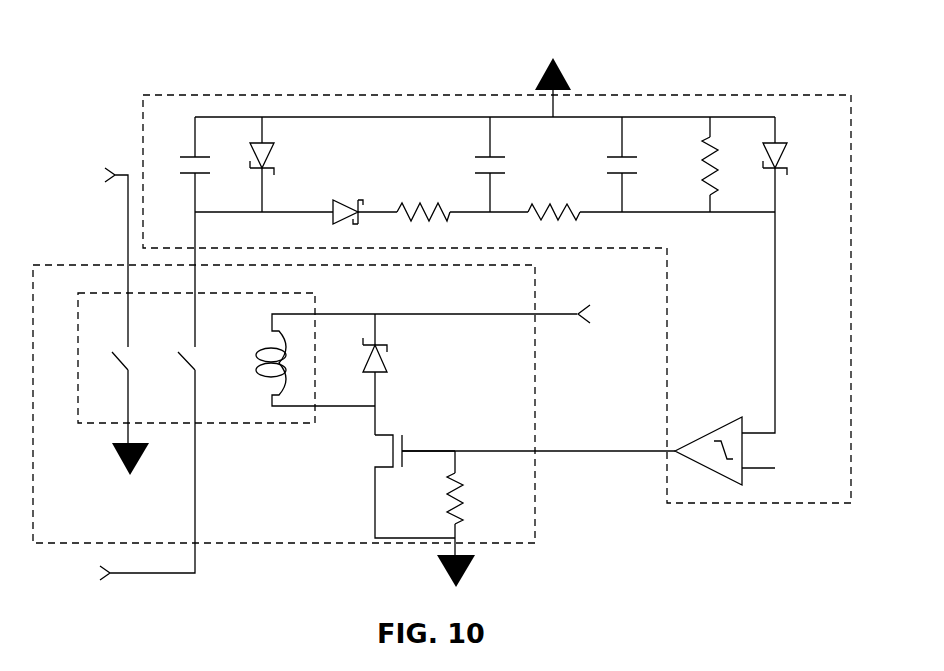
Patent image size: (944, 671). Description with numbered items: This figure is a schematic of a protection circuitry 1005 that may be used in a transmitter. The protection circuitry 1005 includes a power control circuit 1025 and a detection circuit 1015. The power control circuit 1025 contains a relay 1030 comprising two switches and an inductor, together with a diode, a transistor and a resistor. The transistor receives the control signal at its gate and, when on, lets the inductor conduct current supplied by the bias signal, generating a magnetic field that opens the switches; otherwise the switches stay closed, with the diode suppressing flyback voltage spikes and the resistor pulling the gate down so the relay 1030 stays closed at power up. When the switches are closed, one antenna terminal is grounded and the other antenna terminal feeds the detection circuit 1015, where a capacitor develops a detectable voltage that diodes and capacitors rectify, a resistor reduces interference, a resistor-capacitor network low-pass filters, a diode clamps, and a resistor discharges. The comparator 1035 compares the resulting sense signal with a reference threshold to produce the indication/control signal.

The protection circuitry 1005 is at (111, 36).
The detection circuit 1015 is at (466, 95).
The power control circuit 1025 is at (291, 545).
The relay 1030 is at (315, 295).
The comparator 1035 is at (698, 437).